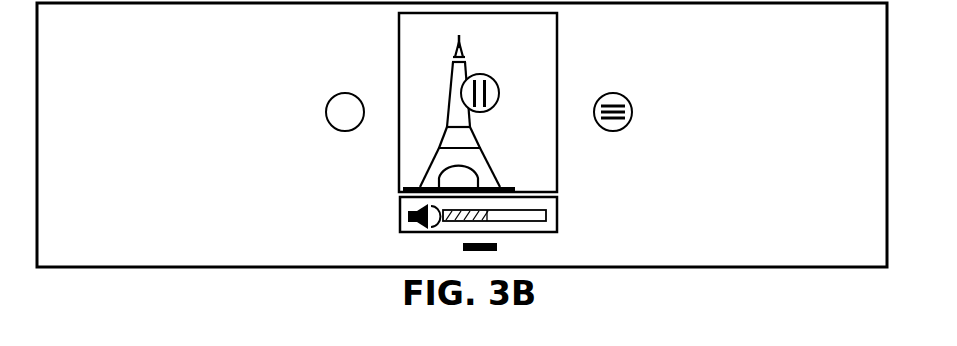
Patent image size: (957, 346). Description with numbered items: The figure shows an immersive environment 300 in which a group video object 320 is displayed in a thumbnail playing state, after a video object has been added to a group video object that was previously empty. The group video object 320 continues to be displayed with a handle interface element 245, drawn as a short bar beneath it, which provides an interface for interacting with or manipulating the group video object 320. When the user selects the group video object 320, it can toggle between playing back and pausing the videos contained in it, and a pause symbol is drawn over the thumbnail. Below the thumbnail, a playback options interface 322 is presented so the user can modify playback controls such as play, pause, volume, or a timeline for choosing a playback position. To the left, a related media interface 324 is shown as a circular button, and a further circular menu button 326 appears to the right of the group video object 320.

The immersive environment 300 is at (462, 135).
The group video object 320 is at (558, 55).
The playback options interface 322 is at (558, 218).
The related media interface 324 is at (337, 92).
The menu button 326 is at (627, 98).
The handle interface element 245 is at (497, 247).